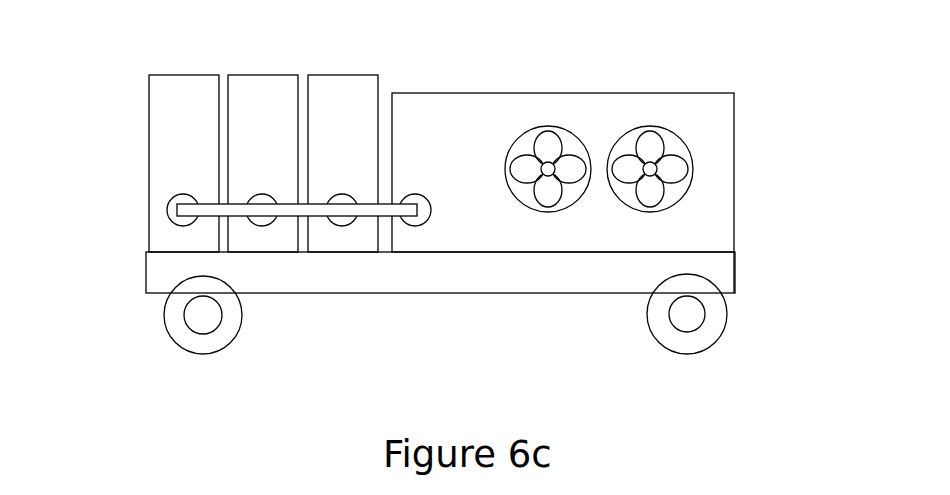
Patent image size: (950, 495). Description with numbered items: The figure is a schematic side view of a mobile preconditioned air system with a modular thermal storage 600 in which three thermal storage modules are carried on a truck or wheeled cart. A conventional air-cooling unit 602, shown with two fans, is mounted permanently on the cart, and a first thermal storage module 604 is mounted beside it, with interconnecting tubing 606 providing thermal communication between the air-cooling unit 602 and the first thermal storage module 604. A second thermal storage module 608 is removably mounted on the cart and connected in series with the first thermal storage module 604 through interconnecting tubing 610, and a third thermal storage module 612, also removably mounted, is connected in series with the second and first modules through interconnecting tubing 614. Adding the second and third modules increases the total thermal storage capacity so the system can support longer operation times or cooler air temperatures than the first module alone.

The mobile preconditioned air system with a modular thermal storage 600 is at (750, 363).
The conventional air-cooling unit 602 is at (742, 157).
The first thermal storage module 604 is at (337, 75).
The interconnecting tubing 606 is at (368, 216).
The second thermal storage module 608 is at (257, 75).
The interconnecting tubing 610 is at (292, 216).
The third thermal storage module 612 is at (148, 117).
The interconnecting tubing 614 is at (202, 224).